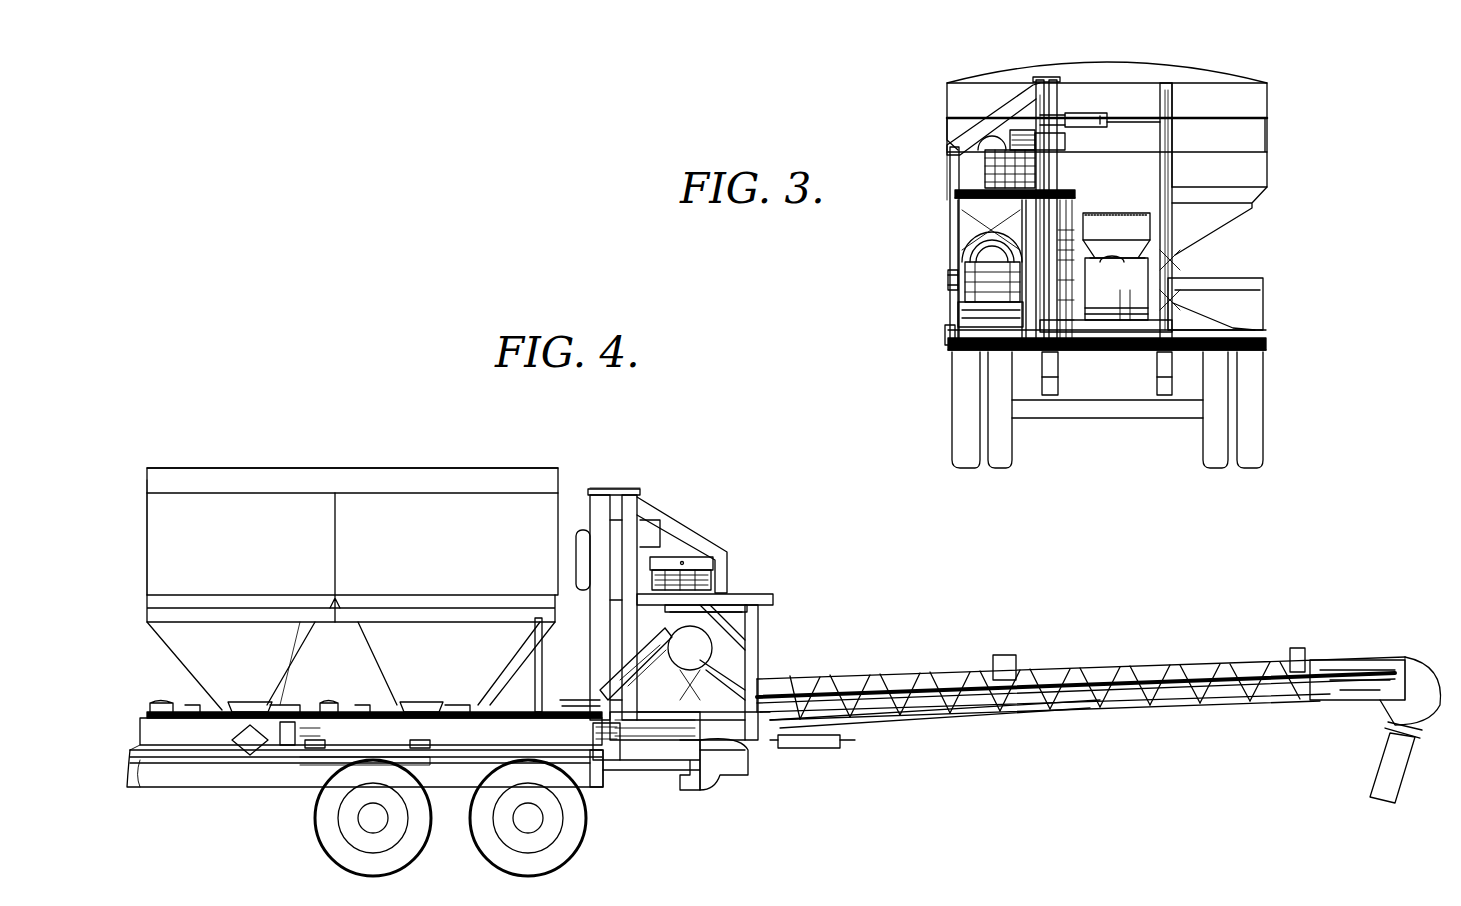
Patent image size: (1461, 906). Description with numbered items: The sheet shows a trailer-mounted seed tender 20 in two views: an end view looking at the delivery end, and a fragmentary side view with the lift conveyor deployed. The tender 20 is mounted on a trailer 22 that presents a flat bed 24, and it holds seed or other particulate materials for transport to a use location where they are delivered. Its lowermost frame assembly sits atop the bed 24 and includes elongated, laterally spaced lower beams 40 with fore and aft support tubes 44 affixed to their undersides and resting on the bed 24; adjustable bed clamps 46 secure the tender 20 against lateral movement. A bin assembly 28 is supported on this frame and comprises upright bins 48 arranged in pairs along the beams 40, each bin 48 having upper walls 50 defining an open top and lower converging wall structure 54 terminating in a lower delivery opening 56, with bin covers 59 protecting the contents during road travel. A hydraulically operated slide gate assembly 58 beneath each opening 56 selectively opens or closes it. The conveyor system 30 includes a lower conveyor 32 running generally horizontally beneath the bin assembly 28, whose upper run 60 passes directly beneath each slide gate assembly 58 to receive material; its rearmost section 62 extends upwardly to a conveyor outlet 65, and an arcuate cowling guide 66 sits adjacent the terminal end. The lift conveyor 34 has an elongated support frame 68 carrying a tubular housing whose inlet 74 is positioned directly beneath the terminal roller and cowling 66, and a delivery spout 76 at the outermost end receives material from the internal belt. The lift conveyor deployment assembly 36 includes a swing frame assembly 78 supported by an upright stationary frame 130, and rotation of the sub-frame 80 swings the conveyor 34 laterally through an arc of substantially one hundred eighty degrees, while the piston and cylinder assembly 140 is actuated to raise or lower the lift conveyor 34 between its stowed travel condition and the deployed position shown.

In FIG. 3, the tender 20 is at (890, 110).
In FIG. 4, the tender 20 is at (713, 476).
In FIG. 3, the trailer 22 is at (1280, 378).
In FIG. 4, the trailer 22 is at (248, 813).
In FIG. 3, the flat bed 24 is at (960, 345).
In FIG. 4, the flat bed 24 is at (445, 748).
In FIG. 3, the bin assembly 28 is at (1305, 120).
In FIG. 4, the bin assembly 28 is at (557, 446).
In FIG. 3, the conveyor system 30 is at (1192, 264).
In FIG. 4, the conveyor system 30 is at (718, 647).
In FIG. 4, the lower conveyor 32 is at (487, 690).
In FIG. 3, the lift conveyor 34 is at (948, 242).
In FIG. 4, the lift conveyor 34 is at (1047, 680).
In FIG. 3, the lift conveyor deployment assembly 36 is at (930, 147).
In FIG. 4, the lift conveyor deployment assembly 36 is at (678, 478).
In FIG. 4, the lower beams 40 is at (158, 735).
In FIG. 4, the support tubes 44 is at (420, 742).
In FIG. 4, the adjustable bed clamps 46 is at (310, 752).
In FIG. 3, the upright bins 48 is at (1280, 93).
In FIG. 4, the upright bins 48 is at (290, 500).
In FIG. 4, the upper walls 50 is at (195, 512).
In FIG. 4, the lower converging wall structure 54 is at (200, 655).
In FIG. 4, the lower delivery opening 56 is at (262, 701).
In FIG. 4, the slide gate assembly 58 is at (220, 709).
In FIG. 3, the bin covers 59 is at (1015, 75).
In FIG. 4, the bin covers 59 is at (262, 470).
In FIG. 4, the upper run 60 is at (297, 710).
In FIG. 4, the rearmost section 62 is at (638, 622).
In FIG. 3, the conveyor outlet 65 is at (1108, 270).
In FIG. 3, the arcuate cowling guide 66 is at (1125, 228).
In FIG. 4, the support frame 68 is at (985, 717).
In FIG. 3, the inlet 74 is at (950, 280).
In FIG. 4, the delivery spout 76 is at (1385, 778).
In FIG. 3, the swing frame assembly 78 is at (990, 100).
In FIG. 4, the swing frame assembly 78 is at (712, 532).
In FIG. 3, the sub-frame 80 is at (946, 210).
In FIG. 4, the sub-frame 80 is at (770, 586).
In FIG. 3, the upright stationary frame 130 is at (1177, 97).
In FIG. 4, the upright stationary frame 130 is at (590, 520).
In FIG. 4, the piston and cylinder assembly 140 is at (820, 742).